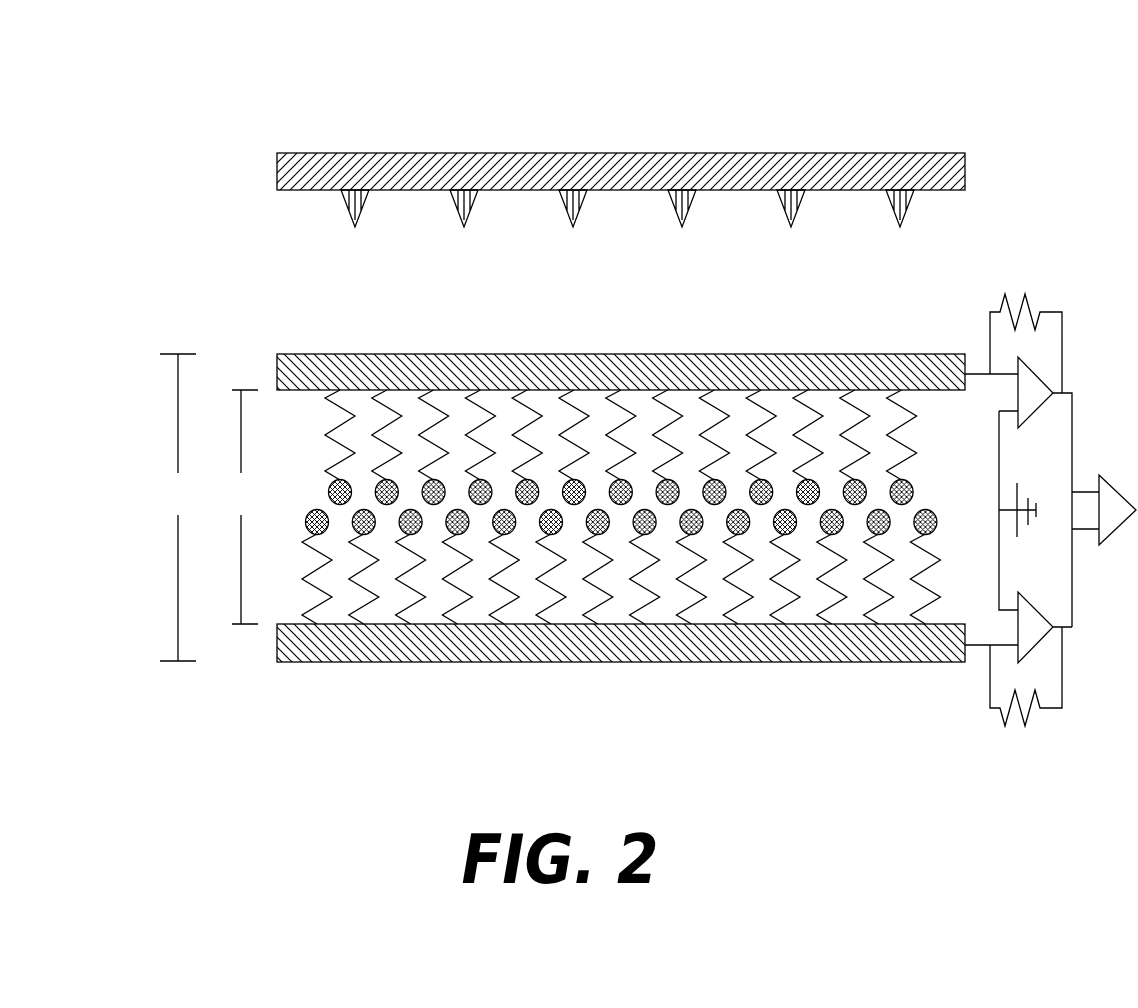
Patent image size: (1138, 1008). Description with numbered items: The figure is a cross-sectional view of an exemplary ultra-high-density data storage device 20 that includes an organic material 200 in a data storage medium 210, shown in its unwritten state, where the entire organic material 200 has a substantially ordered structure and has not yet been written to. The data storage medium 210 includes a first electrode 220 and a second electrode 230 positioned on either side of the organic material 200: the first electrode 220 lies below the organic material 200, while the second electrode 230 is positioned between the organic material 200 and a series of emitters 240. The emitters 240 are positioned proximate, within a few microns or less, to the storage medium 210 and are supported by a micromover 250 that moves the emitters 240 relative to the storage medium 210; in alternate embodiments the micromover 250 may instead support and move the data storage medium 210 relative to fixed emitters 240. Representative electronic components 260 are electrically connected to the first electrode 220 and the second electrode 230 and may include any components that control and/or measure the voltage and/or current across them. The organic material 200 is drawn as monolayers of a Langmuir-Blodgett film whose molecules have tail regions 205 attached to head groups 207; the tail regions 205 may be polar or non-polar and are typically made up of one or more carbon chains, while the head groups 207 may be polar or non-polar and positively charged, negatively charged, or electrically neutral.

The ultra-high-density data storage device 20 is at (355, 60).
The organic material 200 is at (241, 507).
The tail regions 205 is at (573, 427).
The head groups 207 is at (928, 508).
The data storage medium 210 is at (178, 507).
The first electrode 220 is at (638, 662).
The second electrode 230 is at (803, 354).
The emitters 240 is at (680, 222).
The micromover 250 is at (655, 153).
The electronic components 260 is at (982, 772).